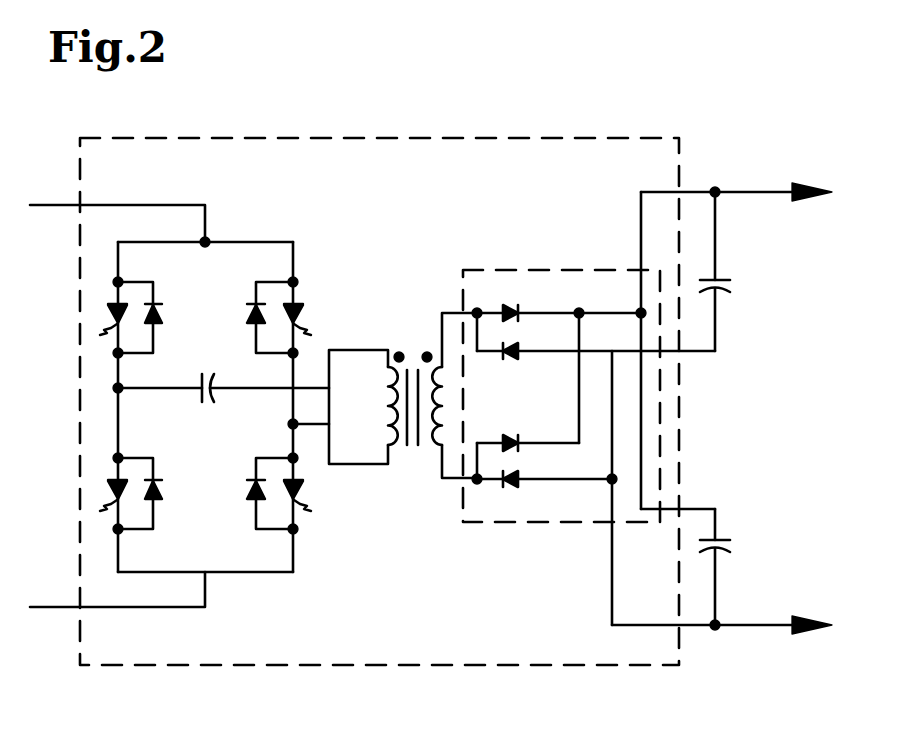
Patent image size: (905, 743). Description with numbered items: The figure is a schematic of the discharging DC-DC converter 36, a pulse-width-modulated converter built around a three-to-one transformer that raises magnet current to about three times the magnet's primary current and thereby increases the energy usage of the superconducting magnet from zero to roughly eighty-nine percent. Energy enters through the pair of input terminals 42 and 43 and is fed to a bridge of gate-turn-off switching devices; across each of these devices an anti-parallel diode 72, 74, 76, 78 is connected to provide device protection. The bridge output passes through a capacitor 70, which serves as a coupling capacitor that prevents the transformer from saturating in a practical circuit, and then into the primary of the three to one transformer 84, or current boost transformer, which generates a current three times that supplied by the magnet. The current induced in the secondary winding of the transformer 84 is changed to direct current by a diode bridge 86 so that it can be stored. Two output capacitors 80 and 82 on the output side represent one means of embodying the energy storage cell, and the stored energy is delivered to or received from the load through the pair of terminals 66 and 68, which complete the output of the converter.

The discharging DC-DC converter 36 is at (390, 137).
The input terminal 42 is at (63, 206).
The input terminal 43 is at (53, 608).
The terminal 66 is at (757, 190).
The terminal 68 is at (753, 624).
The capacitor 70 is at (202, 398).
The anti-parallel diode 72 is at (160, 318).
The anti-parallel diode 74 is at (249, 322).
The anti-parallel diode 76 is at (160, 496).
The anti-parallel diode 78 is at (249, 499).
The output capacitor 80 is at (720, 280).
The output capacitor 82 is at (723, 540).
The three to one transformer 84 is at (415, 348).
The diode bridge 86 is at (527, 515).